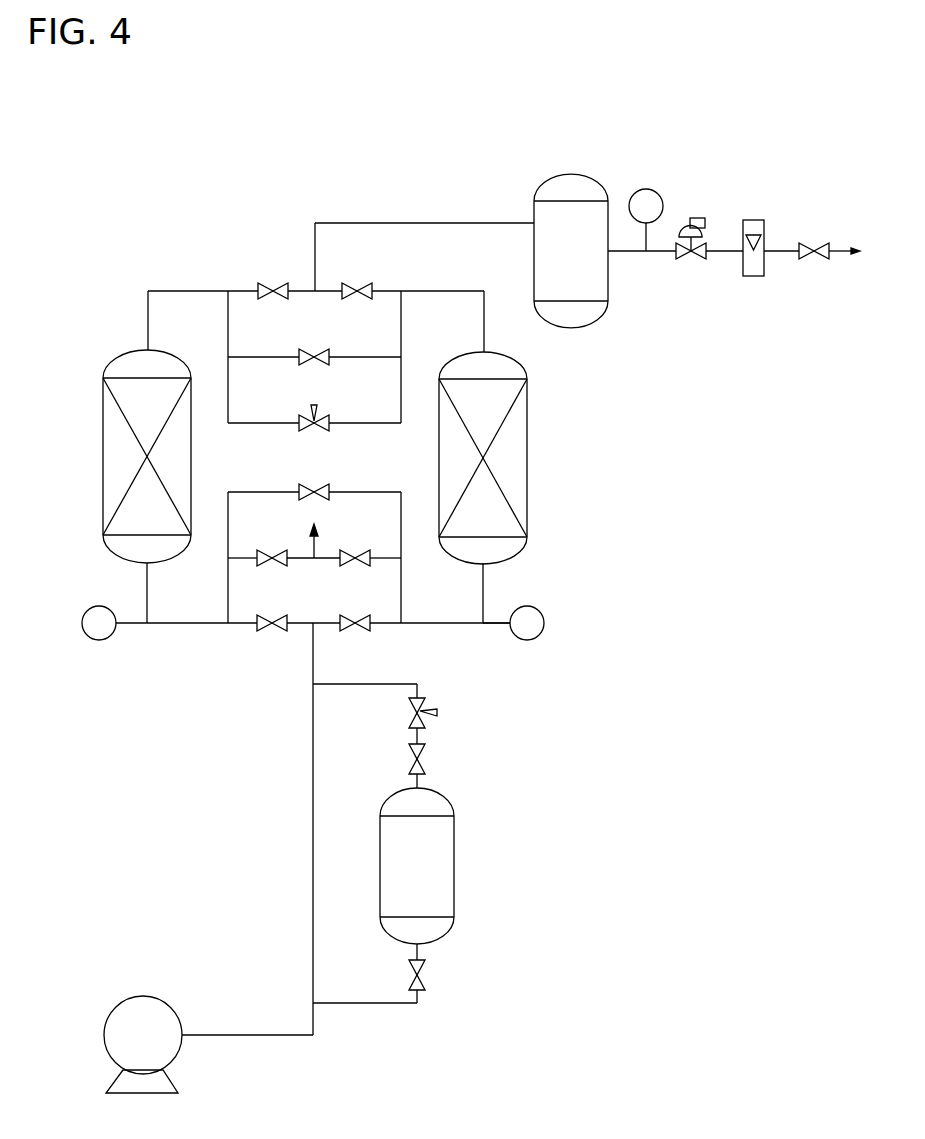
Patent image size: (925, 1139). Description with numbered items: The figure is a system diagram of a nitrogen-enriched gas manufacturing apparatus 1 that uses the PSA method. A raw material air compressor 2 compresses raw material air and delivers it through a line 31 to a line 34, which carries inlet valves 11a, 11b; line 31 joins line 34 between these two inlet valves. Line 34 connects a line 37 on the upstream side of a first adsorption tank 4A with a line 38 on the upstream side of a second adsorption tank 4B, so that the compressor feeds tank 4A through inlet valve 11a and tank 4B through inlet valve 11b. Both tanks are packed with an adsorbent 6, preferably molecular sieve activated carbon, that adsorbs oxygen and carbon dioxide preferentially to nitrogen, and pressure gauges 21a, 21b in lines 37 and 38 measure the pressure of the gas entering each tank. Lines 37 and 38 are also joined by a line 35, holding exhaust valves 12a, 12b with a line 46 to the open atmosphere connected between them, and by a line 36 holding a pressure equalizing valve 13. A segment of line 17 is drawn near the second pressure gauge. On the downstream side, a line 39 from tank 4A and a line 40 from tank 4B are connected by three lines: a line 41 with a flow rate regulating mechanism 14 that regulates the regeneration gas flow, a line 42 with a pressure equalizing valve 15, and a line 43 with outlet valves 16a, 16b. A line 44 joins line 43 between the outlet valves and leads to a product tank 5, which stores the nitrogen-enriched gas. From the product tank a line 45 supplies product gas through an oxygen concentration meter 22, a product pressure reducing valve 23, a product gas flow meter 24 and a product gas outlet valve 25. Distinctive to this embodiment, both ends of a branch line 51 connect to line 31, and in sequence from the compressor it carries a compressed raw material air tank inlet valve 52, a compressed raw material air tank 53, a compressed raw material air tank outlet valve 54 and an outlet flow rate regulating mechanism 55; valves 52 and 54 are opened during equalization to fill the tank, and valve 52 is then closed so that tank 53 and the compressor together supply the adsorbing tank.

The nitrogen-enriched gas manufacturing apparatus 1 is at (108, 167).
The raw material air compressor 2 is at (143, 996).
The first adsorption tank 4A is at (93, 410).
The second adsorption tank 4B is at (537, 410).
The product tank 5 is at (600, 283).
The adsorbent 6 is at (100, 472).
The inlet valve 11a is at (270, 618).
The inlet valve 11b is at (352, 618).
The exhaust valve 12a is at (270, 553).
The exhaust valve 12b is at (360, 553).
The pressure equalizing valve 13 is at (309, 488).
The flow rate regulating mechanism 14 is at (322, 415).
The pressure equalizing valve 15 is at (308, 352).
The outlet valve 16a is at (273, 289).
The outlet valve 16b is at (358, 289).
The pipe 17 is at (540, 632).
The pressure gauge 21a is at (92, 611).
The pressure gauge 21b is at (540, 616).
The oxygen concentration meter 22 is at (646, 189).
The product pressure reducing valve 23 is at (698, 216).
The product gas flow meter 24 is at (755, 220).
The product gas outlet valve 25 is at (814, 243).
The line 31 is at (243, 1037).
The line 34 is at (385, 625).
The line 35 is at (392, 557).
The line 36 is at (370, 492).
The line 37 is at (150, 592).
The line 38 is at (486, 591).
The line 39 is at (148, 315).
The line 40 is at (484, 330).
The line 41 is at (268, 423).
The line 42 is at (270, 357).
The line 43 is at (243, 291).
The line 44 is at (428, 223).
The line 45 is at (782, 254).
The line 46 is at (318, 550).
The branch line 51 is at (363, 1005).
The compressed raw material air tank inlet valve 52 is at (426, 977).
The compressed raw material air tank 53 is at (455, 866).
The compressed raw material air tank outlet valve 54 is at (426, 761).
The compressed raw material air tank outlet flow rate regulating mechanism 55 is at (428, 700).